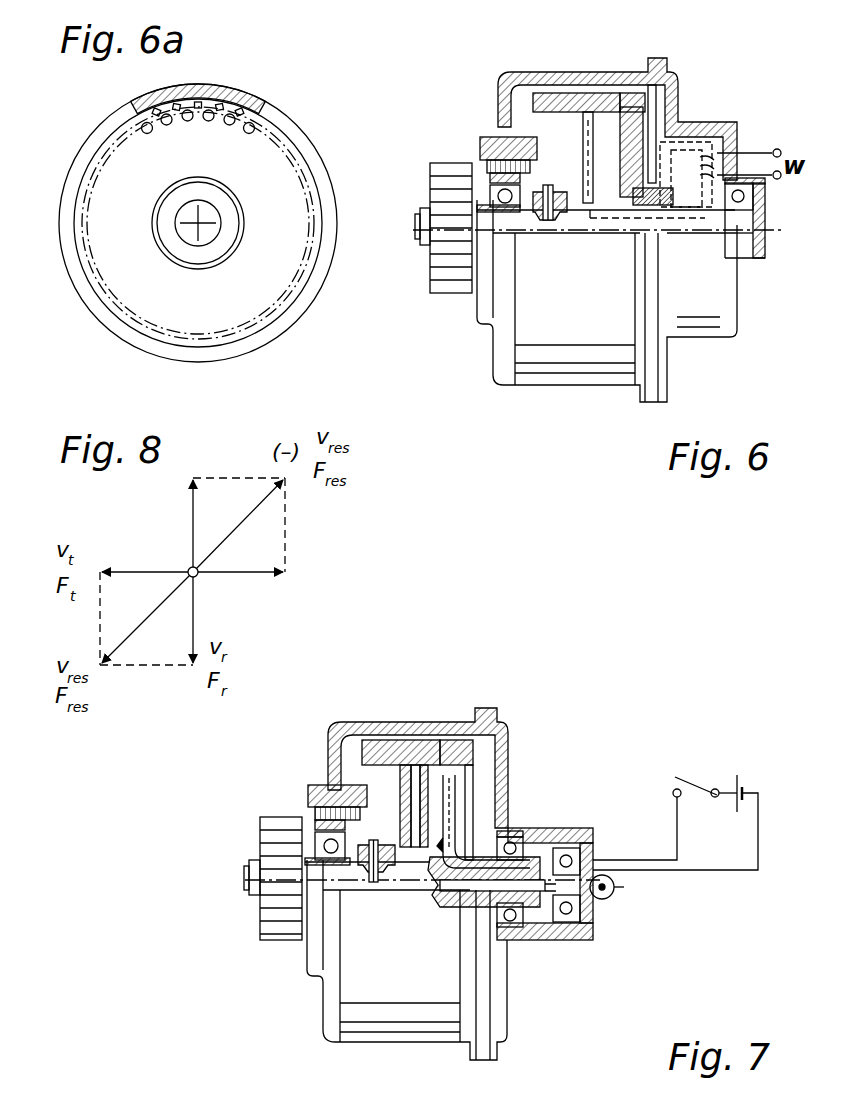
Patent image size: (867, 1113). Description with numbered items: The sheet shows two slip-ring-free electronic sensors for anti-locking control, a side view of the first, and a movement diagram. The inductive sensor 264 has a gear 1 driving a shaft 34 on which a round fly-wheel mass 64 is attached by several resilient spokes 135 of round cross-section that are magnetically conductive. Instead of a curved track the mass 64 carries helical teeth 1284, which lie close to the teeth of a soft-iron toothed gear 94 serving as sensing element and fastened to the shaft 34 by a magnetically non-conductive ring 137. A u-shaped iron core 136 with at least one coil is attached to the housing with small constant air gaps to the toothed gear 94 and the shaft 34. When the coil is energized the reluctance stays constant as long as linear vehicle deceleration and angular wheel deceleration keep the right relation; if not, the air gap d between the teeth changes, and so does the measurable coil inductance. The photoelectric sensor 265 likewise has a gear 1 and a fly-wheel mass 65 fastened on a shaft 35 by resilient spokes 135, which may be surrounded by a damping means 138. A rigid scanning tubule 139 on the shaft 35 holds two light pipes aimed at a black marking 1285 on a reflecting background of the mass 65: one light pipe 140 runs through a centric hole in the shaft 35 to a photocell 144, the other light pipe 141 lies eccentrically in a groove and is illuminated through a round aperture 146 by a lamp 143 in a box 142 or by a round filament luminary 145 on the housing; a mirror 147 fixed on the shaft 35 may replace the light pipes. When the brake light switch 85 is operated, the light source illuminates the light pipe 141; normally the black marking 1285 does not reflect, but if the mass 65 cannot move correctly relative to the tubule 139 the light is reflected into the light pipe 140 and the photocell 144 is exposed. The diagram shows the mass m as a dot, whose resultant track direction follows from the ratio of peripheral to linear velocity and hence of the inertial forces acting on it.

In FIG. 6, the gear 1 is at (455, 167).
In FIG. 7, the gear 1 is at (282, 813).
In FIG. 6A, the air gap d is at (263, 123).
In FIG. 6A, the round mass (fly wheel) 64 is at (307, 153).
In FIG. 6, the round mass (fly wheel) 64 is at (537, 88).
In FIG. 6A, the toothed gear 94 is at (285, 212).
In FIG. 6, the toothed gear 94 is at (650, 113).
In FIG. 6, the resilient spokes 135 is at (583, 105).
In FIG. 7, the resilient spokes 135 is at (412, 752).
In FIG. 6, the helical teeth 1284 is at (633, 102).
In FIG. 6, the u-shaped iron core 136 is at (690, 143).
In FIG. 6, the magnetic non-conductive ring 137 is at (662, 207).
In FIG. 6, the shaft 34 is at (568, 222).
In FIG. 6, the inductive sensor 264 is at (488, 343).
In FIG. 8, the mass m is at (197, 577).
In FIG. 7, the round mass (fly wheel) 65 is at (368, 742).
In FIG. 7, the damping means 138 is at (440, 755).
In FIG. 7, the marking (black mark) 1285 is at (472, 750).
In FIG. 7, the rigid tubule (scanning tubule) 139 is at (467, 785).
In FIG. 7, the light pipe 140 is at (460, 808).
In FIG. 7, the light pipe 141 is at (463, 833).
In FIG. 7, the box 142 is at (590, 832).
In FIG. 7, the lamp 143 is at (597, 855).
In FIG. 7, the photocell 144 is at (602, 899).
In FIG. 7, the round luminary (filament) 145 is at (590, 918).
In FIG. 7, the round aperture 146 is at (552, 907).
In FIG. 7, the mirror 147 is at (442, 893).
In FIG. 7, the shaft 35 is at (357, 872).
In FIG. 7, the electronic sensor 265 is at (318, 994).
In FIG. 7, the brake light switch 85 is at (690, 773).